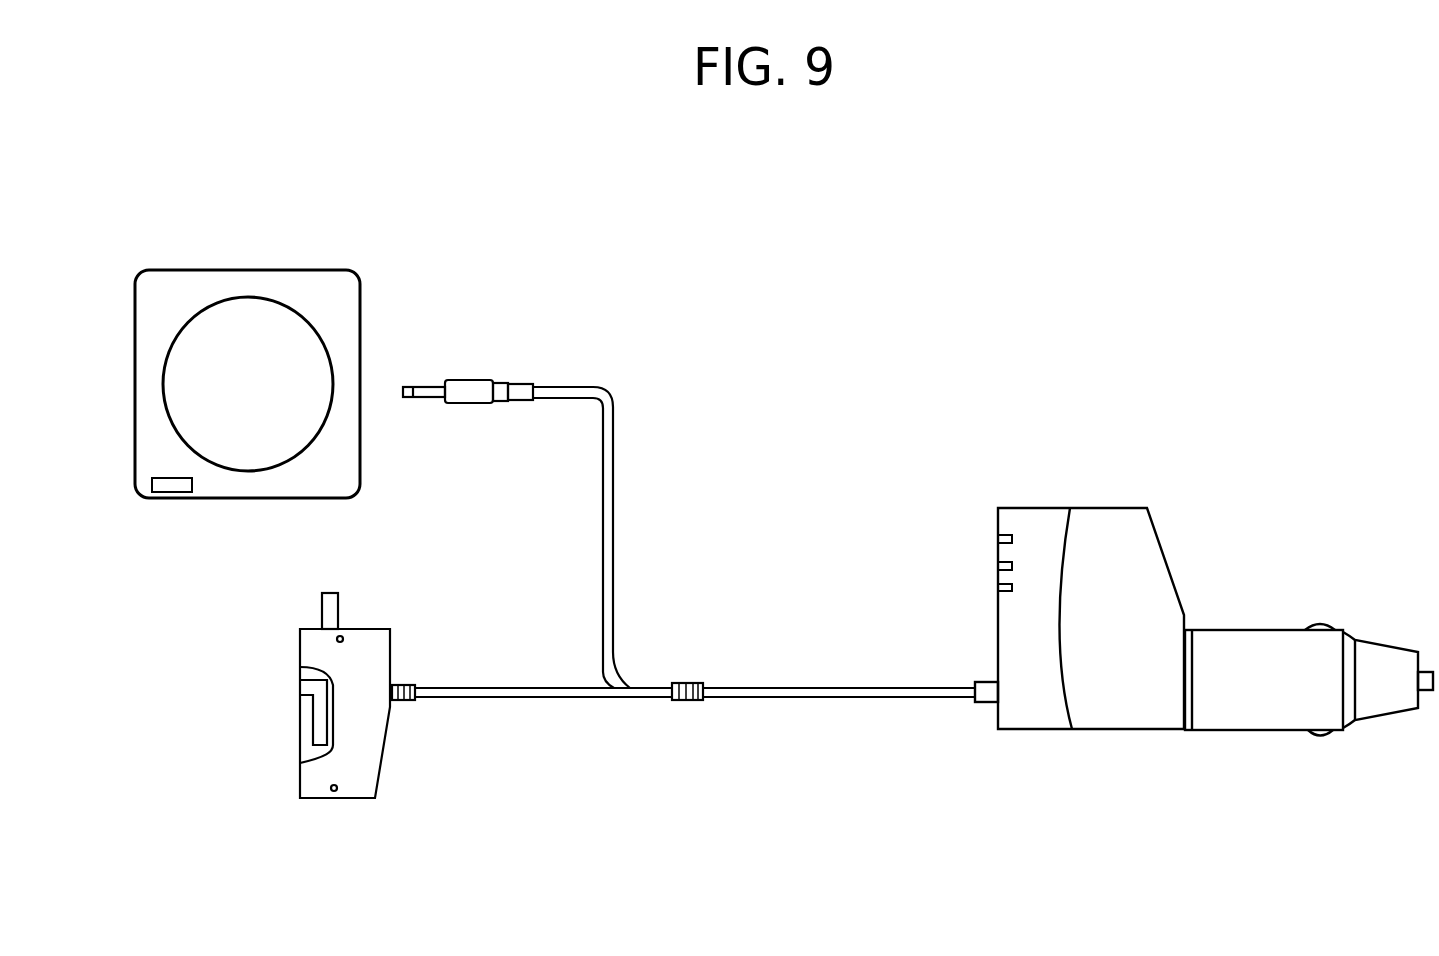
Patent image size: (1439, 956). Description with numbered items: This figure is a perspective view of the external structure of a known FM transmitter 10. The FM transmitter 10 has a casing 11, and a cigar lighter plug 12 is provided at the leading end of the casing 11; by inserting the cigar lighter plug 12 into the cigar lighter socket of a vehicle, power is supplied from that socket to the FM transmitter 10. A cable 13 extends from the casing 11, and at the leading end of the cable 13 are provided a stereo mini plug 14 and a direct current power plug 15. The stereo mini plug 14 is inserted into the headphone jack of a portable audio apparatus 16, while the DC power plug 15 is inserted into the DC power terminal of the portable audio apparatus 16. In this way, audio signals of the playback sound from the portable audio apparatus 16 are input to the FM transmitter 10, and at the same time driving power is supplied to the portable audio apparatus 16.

The FM transmitter 10 is at (1183, 390).
The casing 11 is at (1128, 707).
The cigar lighter plug 12 is at (1277, 720).
The cable 13 is at (833, 697).
The stereo mini plug 14 is at (483, 404).
The DC power plug 15 is at (325, 612).
The portable audio apparatus 16 is at (165, 415).